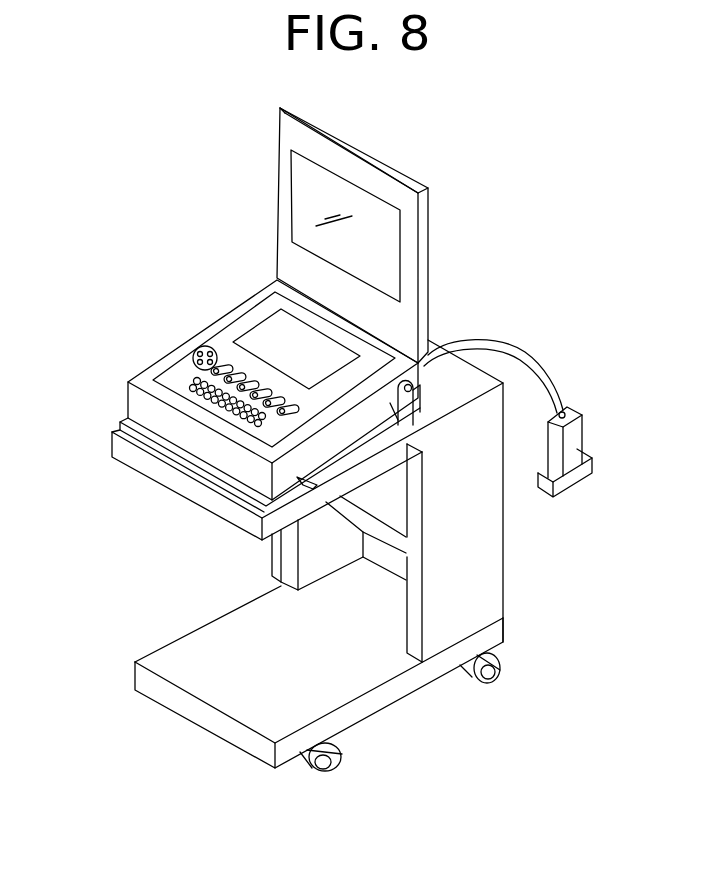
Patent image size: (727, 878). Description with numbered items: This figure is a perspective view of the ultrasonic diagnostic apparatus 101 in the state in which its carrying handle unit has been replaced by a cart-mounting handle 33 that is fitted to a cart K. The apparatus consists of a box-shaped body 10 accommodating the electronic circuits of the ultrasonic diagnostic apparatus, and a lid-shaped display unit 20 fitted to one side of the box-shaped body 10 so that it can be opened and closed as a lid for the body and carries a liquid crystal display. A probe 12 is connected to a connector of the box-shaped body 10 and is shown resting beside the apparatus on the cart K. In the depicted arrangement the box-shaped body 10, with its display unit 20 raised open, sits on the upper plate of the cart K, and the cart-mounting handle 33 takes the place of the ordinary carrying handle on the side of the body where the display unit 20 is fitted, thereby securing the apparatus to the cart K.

The ultrasonic diagnostic apparatus 101 is at (193, 238).
The lid-shaped display unit 20 is at (408, 246).
The box-shaped body 10 is at (134, 404).
The cart-mounting handle 33 is at (411, 412).
The probe 12 is at (573, 443).
The cart K is at (200, 653).